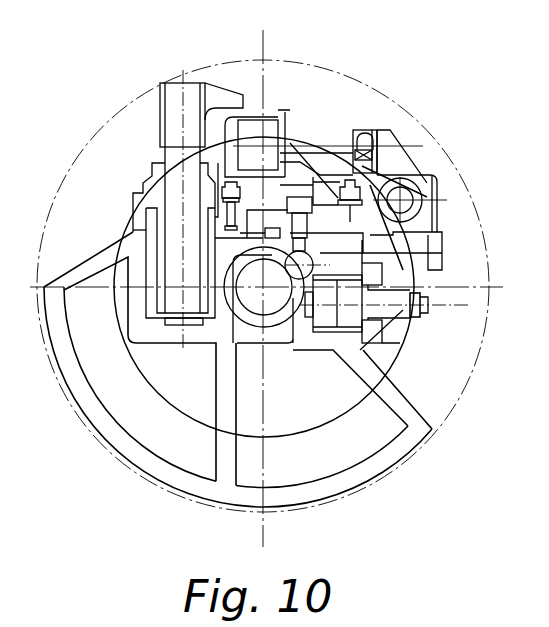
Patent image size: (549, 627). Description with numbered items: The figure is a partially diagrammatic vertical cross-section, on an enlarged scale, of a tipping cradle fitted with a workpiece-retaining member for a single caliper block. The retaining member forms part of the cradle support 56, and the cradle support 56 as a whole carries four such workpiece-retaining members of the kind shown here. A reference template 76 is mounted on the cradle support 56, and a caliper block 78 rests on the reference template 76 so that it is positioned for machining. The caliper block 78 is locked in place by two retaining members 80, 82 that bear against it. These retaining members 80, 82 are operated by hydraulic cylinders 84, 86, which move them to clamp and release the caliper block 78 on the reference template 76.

The cradle support 56 is at (367, 472).
The reference template 76 is at (324, 162).
The caliper block 78 is at (278, 110).
The retaining member 80 is at (213, 96).
The retaining member 82 is at (395, 162).
The hydraulic cylinder 84 is at (176, 296).
The hydraulic cylinder 86 is at (420, 323).